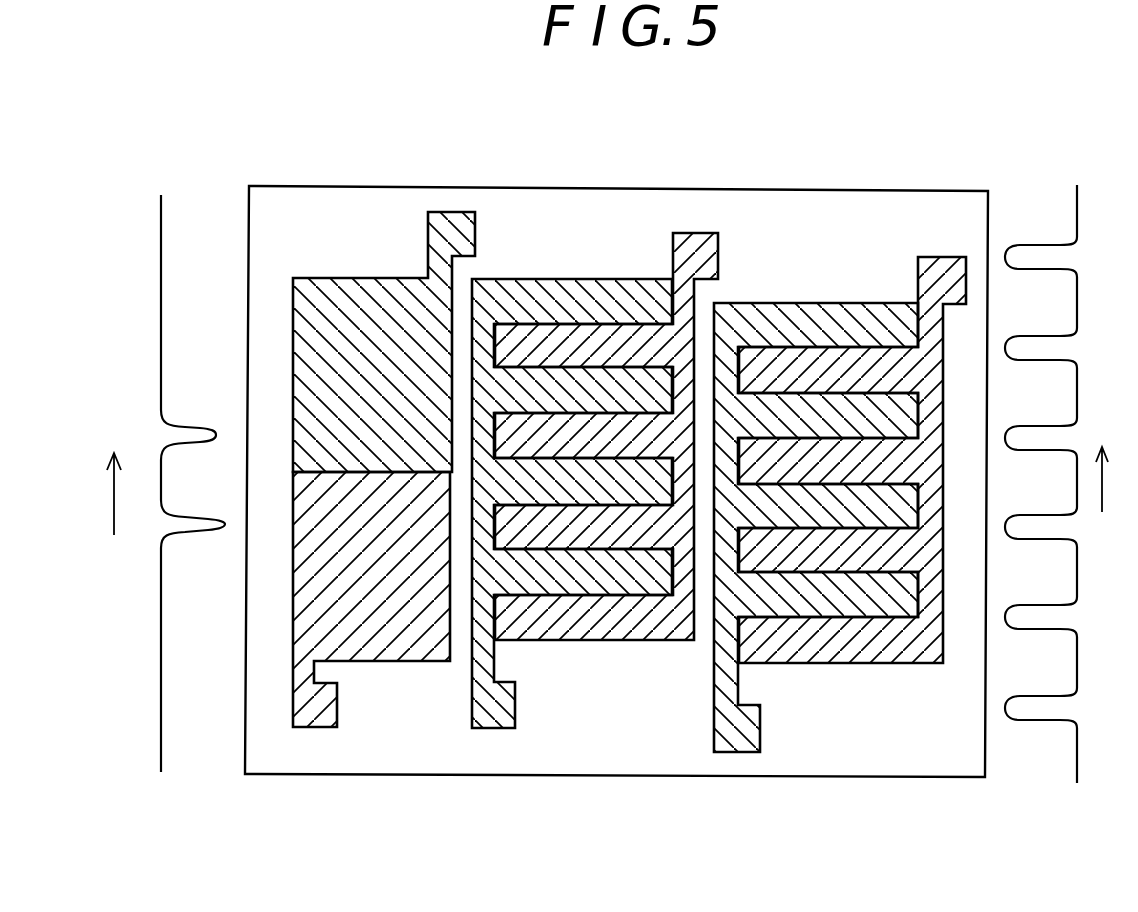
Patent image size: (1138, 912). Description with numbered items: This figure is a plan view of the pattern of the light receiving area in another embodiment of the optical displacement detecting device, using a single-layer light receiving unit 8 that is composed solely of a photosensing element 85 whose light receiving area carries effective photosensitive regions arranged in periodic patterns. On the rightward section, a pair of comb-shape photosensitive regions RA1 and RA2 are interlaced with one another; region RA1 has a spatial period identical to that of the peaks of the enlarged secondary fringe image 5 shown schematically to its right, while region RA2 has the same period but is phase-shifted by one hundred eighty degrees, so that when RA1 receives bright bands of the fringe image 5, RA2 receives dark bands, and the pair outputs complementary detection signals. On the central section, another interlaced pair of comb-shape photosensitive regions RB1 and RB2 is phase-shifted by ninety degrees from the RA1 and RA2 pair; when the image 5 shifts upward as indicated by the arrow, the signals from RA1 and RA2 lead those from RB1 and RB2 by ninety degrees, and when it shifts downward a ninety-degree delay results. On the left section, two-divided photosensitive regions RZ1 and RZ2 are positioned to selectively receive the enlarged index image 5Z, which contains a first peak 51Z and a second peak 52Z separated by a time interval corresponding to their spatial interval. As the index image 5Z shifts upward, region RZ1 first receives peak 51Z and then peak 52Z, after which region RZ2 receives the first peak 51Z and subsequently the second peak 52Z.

The light receiving unit 8 is at (614, 115).
The photosensing element 85 is at (620, 776).
The divided photosensitive region RZ1 is at (316, 720).
The divided photosensitive region RZ2 is at (463, 211).
The comb-shape photosensitive region RB1 is at (693, 232).
The comb-shape photosensitive region RB2 is at (494, 712).
The comb-shape photosensitive region RA1 is at (935, 256).
The comb-shape photosensitive region RA2 is at (736, 735).
The enlarged index image 5Z is at (166, 514).
The first peak 51Z is at (200, 427).
The second peak 52Z is at (200, 541).
The enlarged secondary fringe image 5 is at (1080, 746).